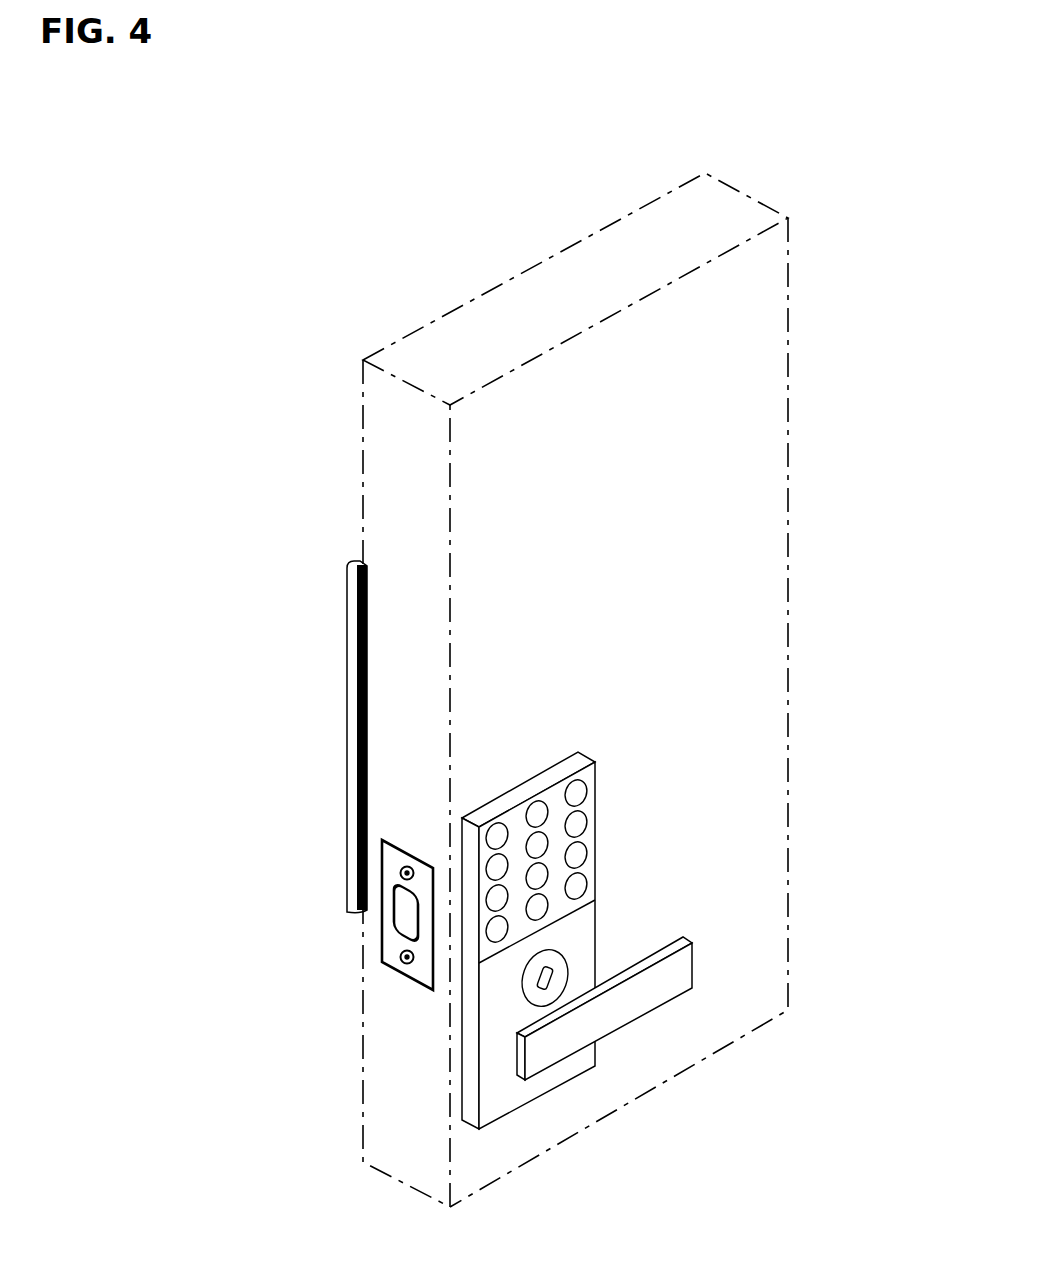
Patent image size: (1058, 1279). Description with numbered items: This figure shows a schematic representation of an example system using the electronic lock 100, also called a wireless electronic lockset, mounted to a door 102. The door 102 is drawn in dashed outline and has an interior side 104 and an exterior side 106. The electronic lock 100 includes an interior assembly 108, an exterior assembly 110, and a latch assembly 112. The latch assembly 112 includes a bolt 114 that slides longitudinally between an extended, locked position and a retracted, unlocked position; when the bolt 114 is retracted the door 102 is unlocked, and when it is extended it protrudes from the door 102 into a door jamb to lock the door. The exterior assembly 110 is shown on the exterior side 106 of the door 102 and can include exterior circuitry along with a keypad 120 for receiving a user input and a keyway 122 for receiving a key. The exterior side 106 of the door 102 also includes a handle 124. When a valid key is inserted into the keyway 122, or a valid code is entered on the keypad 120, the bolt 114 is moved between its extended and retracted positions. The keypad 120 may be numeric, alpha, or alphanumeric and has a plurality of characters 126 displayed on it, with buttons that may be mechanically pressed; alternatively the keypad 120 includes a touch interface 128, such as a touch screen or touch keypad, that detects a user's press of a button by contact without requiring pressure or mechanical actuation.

The electronic lock 100 is at (332, 590).
The door 102 is at (522, 313).
The interior side 104 is at (367, 440).
The exterior side 106 is at (715, 330).
The interior assembly 108 is at (330, 665).
The exterior assembly 110 is at (512, 883).
The latch assembly 112 is at (350, 939).
The bolt 114 is at (345, 912).
The keypad 120 is at (613, 844).
The keyway 122 is at (517, 997).
The handle 124 is at (558, 1040).
The characters 126 is at (572, 858).
The touch interface 128 is at (588, 873).